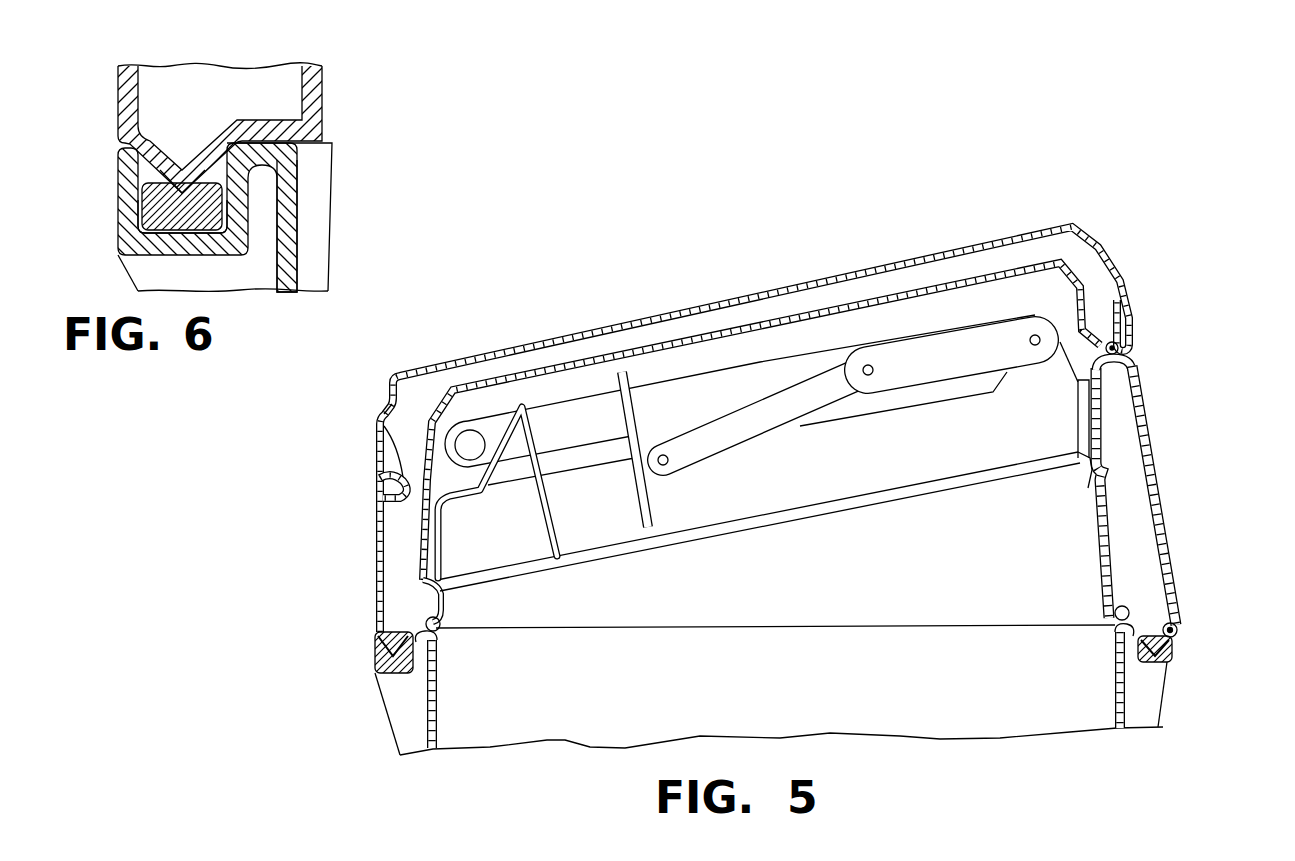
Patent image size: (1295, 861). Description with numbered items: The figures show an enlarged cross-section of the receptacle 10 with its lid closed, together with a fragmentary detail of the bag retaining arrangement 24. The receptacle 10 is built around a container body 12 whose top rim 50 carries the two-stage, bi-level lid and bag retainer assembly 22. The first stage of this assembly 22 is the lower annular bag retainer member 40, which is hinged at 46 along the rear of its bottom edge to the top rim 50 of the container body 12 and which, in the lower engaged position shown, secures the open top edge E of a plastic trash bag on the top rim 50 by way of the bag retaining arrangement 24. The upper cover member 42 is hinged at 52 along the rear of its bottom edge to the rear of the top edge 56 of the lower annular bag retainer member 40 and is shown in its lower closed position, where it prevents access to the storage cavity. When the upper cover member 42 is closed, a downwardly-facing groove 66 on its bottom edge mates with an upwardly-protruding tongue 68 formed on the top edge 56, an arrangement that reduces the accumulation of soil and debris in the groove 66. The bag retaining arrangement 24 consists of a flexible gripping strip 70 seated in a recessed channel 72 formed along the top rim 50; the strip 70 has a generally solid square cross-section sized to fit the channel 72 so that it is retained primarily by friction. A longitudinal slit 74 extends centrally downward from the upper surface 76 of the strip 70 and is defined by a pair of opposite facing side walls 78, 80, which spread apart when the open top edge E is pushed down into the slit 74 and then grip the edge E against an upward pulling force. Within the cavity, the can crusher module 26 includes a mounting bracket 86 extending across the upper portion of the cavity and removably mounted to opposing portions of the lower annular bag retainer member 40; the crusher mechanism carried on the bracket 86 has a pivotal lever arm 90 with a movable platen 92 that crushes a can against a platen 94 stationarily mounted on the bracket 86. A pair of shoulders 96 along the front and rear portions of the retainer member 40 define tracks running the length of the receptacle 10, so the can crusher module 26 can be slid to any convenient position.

In FIG. 5, the receptacle 10 is at (973, 236).
In FIG. 6, the container body 12 is at (308, 276).
In FIG. 5, the container body 12 is at (992, 746).
In FIG. 5, the lid and bag retainer assembly 22 is at (1154, 407).
In FIG. 6, the bag retaining arrangement 24 is at (212, 95).
In FIG. 5, the can crusher module 26 is at (787, 542).
In FIG. 6, the lower annular bag retainer member 40 is at (324, 87).
In FIG. 5, the lower annular bag retainer member 40 is at (1174, 537).
In FIG. 5, the upper cover member 42 is at (718, 301).
In FIG. 5, the hinge 46 is at (1177, 626).
In FIG. 5, the top rim 50 is at (447, 624).
In FIG. 5, the hinge 52 is at (1123, 282).
In FIG. 5, the top edge 56 is at (377, 495).
In FIG. 5, the groove 66 is at (377, 540).
In FIG. 5, the tongue 68 is at (381, 416).
In FIG. 6, the flexible gripping strip 70 is at (165, 205).
In FIG. 5, the flexible gripping strip 70 is at (390, 676).
In FIG. 6, the channel 72 is at (232, 235).
In FIG. 6, the slit 74 is at (186, 222).
In FIG. 5, the slit 74 is at (374, 651).
In FIG. 6, the upper surface 76 is at (186, 194).
In FIG. 6, the side wall 78 is at (195, 204).
In FIG. 6, the side wall 80 is at (148, 222).
In FIG. 5, the mounting bracket 86 is at (881, 506).
In FIG. 5, the pivotal lever arm 90 is at (731, 402).
In FIG. 5, the movable platen 92 is at (660, 508).
In FIG. 5, the platen 94 is at (545, 515).
In FIG. 5, the shoulders 96 is at (434, 586).
In FIG. 6, the open top edge E is at (283, 144).